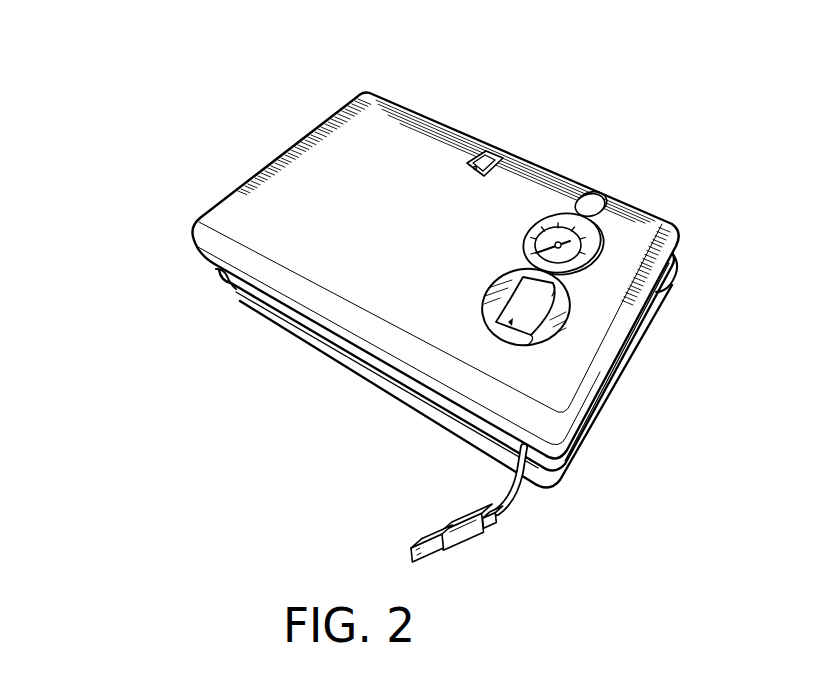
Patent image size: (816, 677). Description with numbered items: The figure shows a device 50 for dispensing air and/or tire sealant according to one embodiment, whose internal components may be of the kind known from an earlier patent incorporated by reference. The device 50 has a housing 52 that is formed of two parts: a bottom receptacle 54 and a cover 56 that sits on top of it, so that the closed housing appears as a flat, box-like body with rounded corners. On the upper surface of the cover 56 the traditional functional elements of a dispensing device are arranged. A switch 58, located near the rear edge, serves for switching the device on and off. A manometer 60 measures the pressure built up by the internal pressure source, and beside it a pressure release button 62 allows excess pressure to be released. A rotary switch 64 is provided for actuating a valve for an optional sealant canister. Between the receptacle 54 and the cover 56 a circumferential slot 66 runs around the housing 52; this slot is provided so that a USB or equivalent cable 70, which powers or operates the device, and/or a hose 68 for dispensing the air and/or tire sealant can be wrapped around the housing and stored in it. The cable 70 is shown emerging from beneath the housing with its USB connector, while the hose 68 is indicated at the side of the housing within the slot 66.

The device 50 is at (196, 340).
The housing 52 is at (270, 146).
The bottom receptacle 54 is at (352, 373).
The cover 56 is at (221, 213).
The switch 58 is at (496, 158).
The manometer 60 is at (527, 236).
The pressure release button 62 is at (594, 200).
The rotary switch 64 is at (552, 328).
The circumferential slot 66 is at (215, 270).
The hose 68 is at (662, 273).
The cable 70 is at (519, 501).